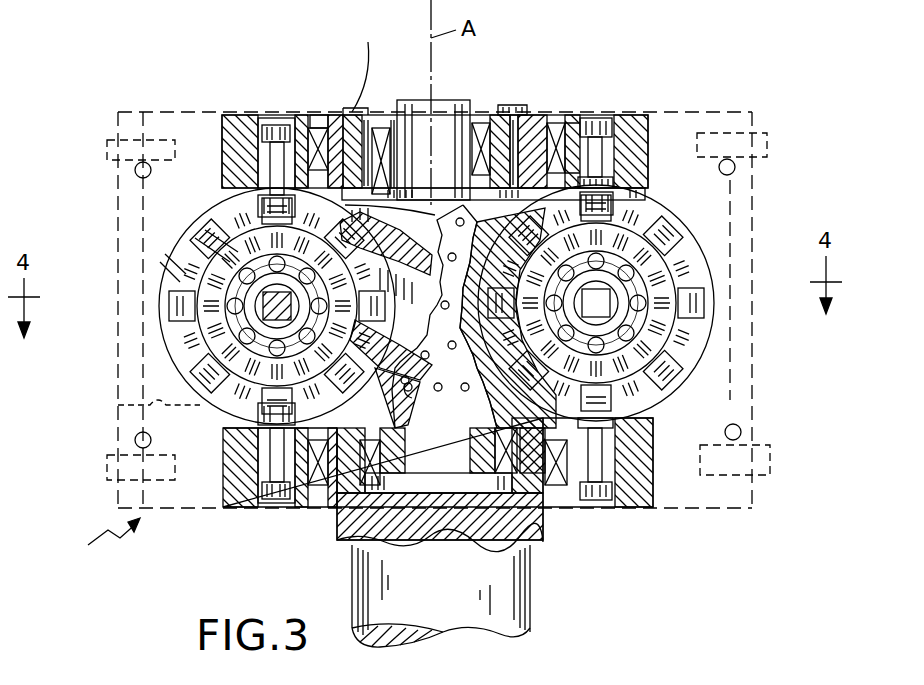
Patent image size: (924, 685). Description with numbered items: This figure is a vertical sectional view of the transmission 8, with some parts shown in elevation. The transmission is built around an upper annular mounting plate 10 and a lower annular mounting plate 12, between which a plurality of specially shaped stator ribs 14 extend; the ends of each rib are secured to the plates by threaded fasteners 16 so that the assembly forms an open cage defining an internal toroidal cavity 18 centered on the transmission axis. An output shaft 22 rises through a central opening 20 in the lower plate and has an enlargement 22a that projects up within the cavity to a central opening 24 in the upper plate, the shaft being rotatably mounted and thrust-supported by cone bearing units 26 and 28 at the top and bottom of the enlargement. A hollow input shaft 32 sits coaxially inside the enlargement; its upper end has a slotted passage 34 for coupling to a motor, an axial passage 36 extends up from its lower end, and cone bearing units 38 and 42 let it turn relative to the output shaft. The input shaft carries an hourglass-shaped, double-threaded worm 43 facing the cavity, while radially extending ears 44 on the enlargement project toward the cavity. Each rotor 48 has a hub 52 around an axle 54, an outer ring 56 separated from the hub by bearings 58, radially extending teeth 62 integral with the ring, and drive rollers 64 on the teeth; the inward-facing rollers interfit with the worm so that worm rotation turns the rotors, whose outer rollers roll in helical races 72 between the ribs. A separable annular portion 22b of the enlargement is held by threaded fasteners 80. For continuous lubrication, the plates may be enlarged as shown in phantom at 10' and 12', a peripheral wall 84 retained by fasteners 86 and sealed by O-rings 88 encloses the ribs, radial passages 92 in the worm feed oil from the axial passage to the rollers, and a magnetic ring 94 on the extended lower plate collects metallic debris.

The transmission 8 is at (104, 542).
The upper annular mounting plate 10 is at (422, 133).
The enlarged upper mounting plate 10' is at (435, 90).
The lower annular mounting plate 12 is at (429, 483).
The enlarged lower mounting plate 12' is at (435, 538).
The stator ribs 14 is at (162, 276).
The threaded fasteners 16 is at (612, 132).
The toroidal cavity 18 is at (690, 350).
The central opening in bottom plate 20 is at (352, 108).
The output shaft 22 is at (515, 570).
The shaft enlargement 22a is at (610, 170).
The annular portion of enlargement 22b is at (499, 106).
The central opening in top plate 24 is at (548, 114).
The upper cone bearing unit 26 is at (572, 128).
The lower cone bearing unit 28 is at (600, 455).
The input shaft 32 is at (492, 108).
The passage 34 is at (438, 114).
The axial passage 36 is at (438, 451).
The upper cone bearing unit 38 is at (392, 118).
The lower cone bearing unit 42 is at (498, 452).
The worm gear 43 is at (490, 350).
The ears 44 is at (224, 180).
The rotor 48 is at (190, 300).
The hub 52 is at (240, 340).
The axle 54 is at (384, 276).
The outer shell or ring 56 is at (225, 228).
The bearings 58 is at (182, 262).
The fingers or teeth 62 is at (225, 408).
The drive rollers 64 is at (210, 310).
The helix-like slits or races 72 is at (690, 332).
The threaded fasteners 80 is at (358, 63).
The peripheral wall 84 is at (118, 218).
The fasteners 86 is at (107, 142).
The O-rings 88 is at (133, 172).
The radial passages 92 is at (420, 398).
The magnetic ring 94 is at (118, 405).